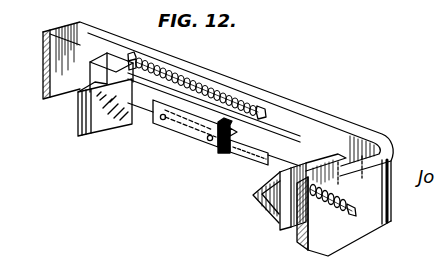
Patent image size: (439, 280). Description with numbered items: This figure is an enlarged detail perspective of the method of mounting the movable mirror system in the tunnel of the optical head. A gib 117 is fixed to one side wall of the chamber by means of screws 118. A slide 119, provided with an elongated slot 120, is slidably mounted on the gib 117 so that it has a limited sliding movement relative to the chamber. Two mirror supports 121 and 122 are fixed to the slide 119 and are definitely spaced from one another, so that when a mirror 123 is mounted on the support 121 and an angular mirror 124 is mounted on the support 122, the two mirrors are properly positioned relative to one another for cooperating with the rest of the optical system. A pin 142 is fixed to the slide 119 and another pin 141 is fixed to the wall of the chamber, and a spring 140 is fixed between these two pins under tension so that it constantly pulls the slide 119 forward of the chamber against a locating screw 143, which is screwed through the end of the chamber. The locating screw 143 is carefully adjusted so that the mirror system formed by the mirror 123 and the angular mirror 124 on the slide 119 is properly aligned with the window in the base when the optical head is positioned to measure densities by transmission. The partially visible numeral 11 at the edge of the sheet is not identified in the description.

The gib 117 is at (193, 138).
The screws 118 is at (163, 121).
The slide 119 is at (242, 168).
The elongated slot 120 is at (230, 152).
The mirror support 121 is at (80, 132).
The mirror support 122 is at (290, 227).
The mirror 123 is at (100, 130).
The angular mirror 124 is at (265, 205).
The spring 140 is at (232, 90).
The pin 141 is at (270, 104).
The pin 142 is at (135, 56).
The locating screw 143 is at (352, 218).
The frame 11 is at (395, 160).